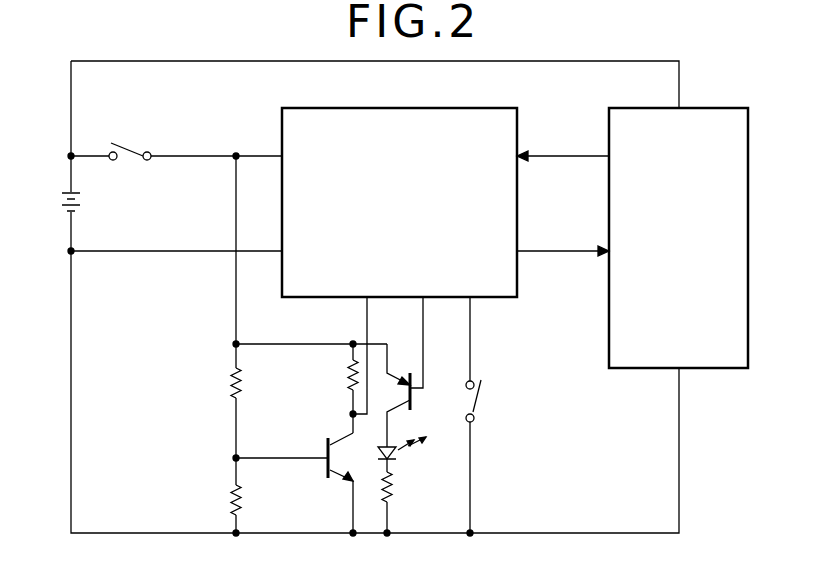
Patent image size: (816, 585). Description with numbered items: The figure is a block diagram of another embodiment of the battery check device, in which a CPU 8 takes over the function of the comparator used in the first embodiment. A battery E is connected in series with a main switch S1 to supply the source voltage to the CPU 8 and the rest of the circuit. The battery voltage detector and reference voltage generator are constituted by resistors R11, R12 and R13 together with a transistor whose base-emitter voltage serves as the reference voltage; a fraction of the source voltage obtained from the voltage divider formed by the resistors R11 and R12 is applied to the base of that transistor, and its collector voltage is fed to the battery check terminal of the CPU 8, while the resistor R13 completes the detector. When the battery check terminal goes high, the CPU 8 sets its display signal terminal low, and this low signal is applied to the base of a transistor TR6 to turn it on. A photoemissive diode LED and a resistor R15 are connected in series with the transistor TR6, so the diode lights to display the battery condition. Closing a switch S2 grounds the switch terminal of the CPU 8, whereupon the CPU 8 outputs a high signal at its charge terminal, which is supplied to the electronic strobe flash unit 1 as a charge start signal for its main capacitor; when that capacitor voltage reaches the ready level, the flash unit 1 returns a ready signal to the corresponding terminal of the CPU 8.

The CPU 8 is at (462, 103).
The electronic strobe flash unit 1 is at (609, 331).
The battery E is at (81, 203).
The main switch S1 is at (130, 141).
The switch S2 is at (484, 401).
The resistor R11 is at (218, 383).
The resistor R12 is at (217, 500).
The resistor R13 is at (335, 388).
The resistor R15 is at (408, 502).
The transistor TR6 is at (420, 395).
The photoemissive diode LED is at (408, 456).